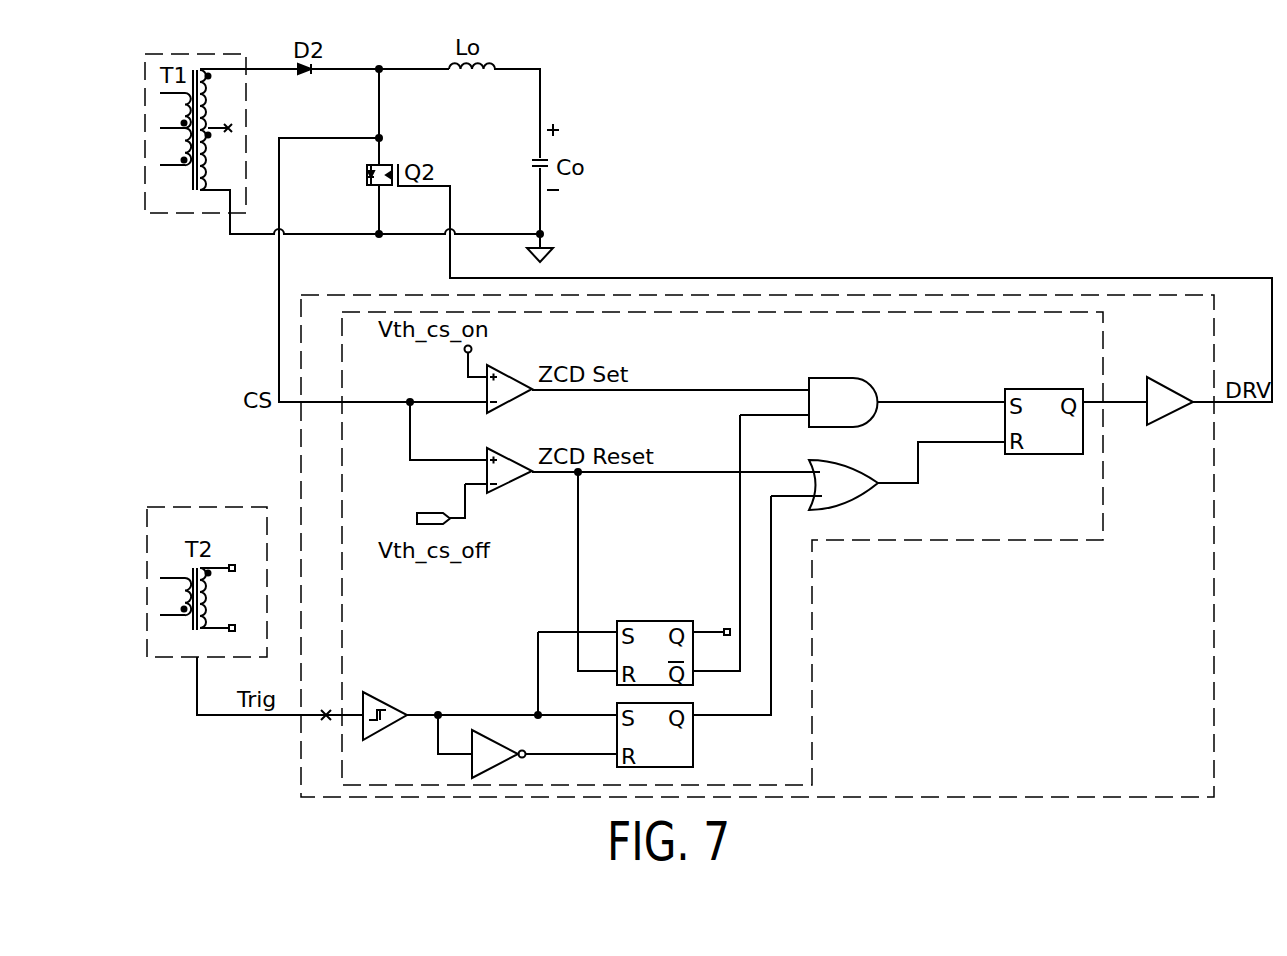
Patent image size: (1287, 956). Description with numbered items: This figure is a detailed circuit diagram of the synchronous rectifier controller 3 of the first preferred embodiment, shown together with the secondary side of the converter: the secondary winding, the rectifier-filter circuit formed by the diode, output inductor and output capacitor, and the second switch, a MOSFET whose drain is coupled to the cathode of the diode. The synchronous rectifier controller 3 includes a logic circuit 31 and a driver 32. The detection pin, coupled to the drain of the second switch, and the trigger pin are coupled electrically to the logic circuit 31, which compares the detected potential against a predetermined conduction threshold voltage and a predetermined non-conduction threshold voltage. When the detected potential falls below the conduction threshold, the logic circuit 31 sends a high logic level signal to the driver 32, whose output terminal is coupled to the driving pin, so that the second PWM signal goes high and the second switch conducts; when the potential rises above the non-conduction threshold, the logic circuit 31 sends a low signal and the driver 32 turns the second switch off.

The synchronous rectifier controller 3 is at (1205, 513).
The logic circuit 31 is at (800, 623).
The driver 32 is at (1160, 395).